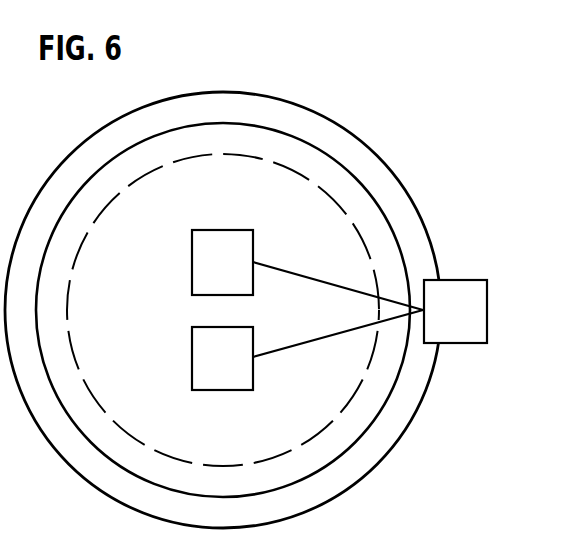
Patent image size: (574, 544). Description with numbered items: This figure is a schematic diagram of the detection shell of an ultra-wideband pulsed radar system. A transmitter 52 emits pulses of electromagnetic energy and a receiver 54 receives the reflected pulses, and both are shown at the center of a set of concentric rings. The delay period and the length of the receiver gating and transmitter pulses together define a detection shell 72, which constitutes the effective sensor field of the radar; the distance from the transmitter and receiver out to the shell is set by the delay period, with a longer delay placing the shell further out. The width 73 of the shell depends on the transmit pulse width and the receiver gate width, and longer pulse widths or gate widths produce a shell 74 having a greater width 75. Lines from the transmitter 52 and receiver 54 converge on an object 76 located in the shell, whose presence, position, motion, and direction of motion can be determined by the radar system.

The transmitter 52 is at (236, 230).
The receiver 54 is at (240, 390).
The detection shell 72 is at (375, 152).
The width of the shell 73 is at (254, 120).
The shell 74 is at (186, 160).
The greater width 75 is at (278, 160).
The object 76 is at (487, 295).